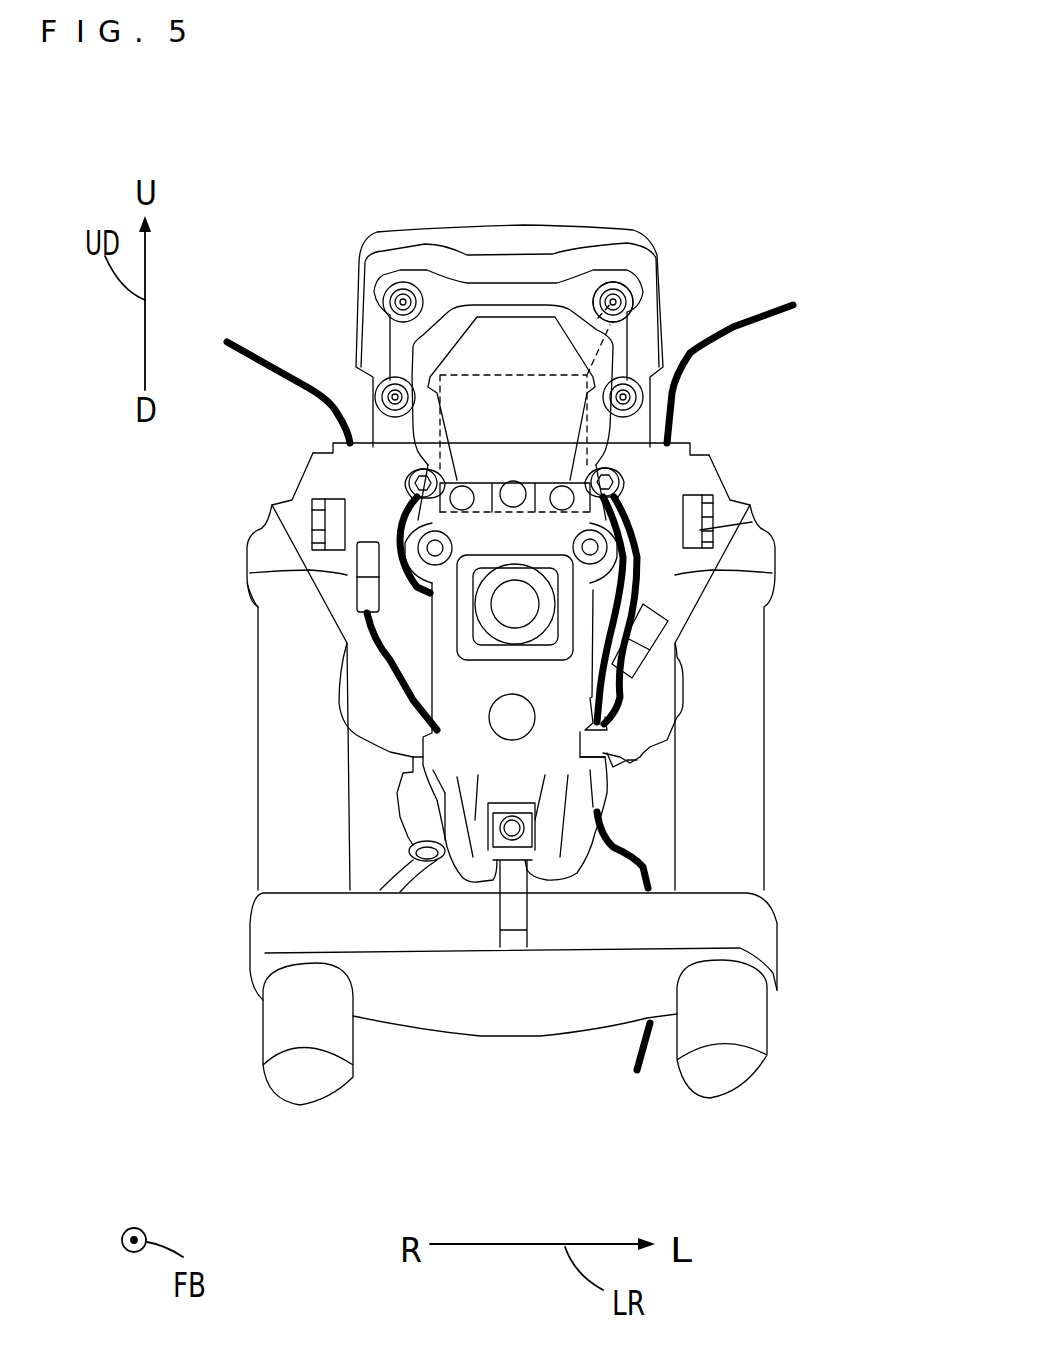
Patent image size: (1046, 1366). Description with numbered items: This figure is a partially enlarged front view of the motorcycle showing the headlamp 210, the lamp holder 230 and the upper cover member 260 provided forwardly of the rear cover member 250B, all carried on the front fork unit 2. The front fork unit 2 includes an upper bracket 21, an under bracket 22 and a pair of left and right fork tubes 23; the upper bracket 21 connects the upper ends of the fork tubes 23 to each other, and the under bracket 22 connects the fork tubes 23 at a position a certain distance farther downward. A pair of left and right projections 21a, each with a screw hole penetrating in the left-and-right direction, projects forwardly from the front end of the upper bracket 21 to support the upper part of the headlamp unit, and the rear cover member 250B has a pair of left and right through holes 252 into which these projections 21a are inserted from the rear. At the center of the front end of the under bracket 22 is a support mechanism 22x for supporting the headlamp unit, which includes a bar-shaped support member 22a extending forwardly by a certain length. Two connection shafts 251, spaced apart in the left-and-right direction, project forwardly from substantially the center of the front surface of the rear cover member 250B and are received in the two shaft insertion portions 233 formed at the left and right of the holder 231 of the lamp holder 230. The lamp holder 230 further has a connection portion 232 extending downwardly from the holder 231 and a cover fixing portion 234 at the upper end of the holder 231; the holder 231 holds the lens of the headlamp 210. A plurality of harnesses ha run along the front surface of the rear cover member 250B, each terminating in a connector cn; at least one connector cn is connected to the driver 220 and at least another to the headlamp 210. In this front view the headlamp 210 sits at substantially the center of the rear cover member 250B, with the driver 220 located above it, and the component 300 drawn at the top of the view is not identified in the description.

The front fork unit 2 is at (810, 1062).
The upper bracket 21 is at (763, 560).
The projection 21a is at (313, 532).
The under bracket 22 is at (767, 935).
The support member 22a is at (528, 905).
The support mechanism 22x is at (489, 910).
The fork tube 23 is at (272, 872).
The headlamp 210 is at (475, 604).
The driver 220 is at (640, 292).
The lamp holder 230 is at (553, 748).
The holder 231 is at (473, 682).
The connection portion 232 is at (440, 793).
The shaft insertion portion 233 is at (400, 532).
The cover fixing portion 234 is at (622, 507).
The rear cover member 250B is at (403, 345).
The connection shaft 251 is at (357, 603).
The through hole 252 is at (293, 440).
The upper cover member 260 is at (503, 300).
The upper housing 300 is at (565, 218).
The harness ha is at (258, 352).
The connector cn is at (258, 578).